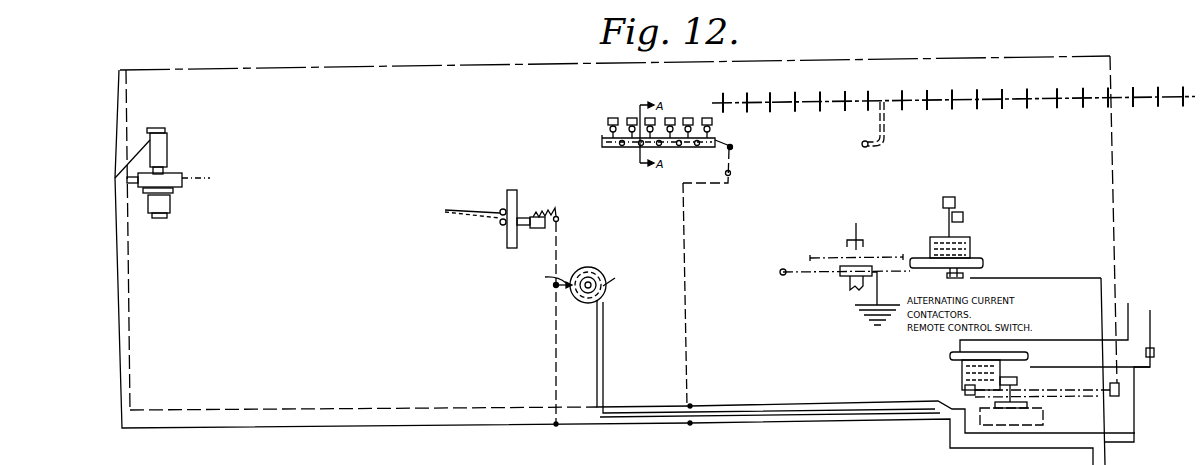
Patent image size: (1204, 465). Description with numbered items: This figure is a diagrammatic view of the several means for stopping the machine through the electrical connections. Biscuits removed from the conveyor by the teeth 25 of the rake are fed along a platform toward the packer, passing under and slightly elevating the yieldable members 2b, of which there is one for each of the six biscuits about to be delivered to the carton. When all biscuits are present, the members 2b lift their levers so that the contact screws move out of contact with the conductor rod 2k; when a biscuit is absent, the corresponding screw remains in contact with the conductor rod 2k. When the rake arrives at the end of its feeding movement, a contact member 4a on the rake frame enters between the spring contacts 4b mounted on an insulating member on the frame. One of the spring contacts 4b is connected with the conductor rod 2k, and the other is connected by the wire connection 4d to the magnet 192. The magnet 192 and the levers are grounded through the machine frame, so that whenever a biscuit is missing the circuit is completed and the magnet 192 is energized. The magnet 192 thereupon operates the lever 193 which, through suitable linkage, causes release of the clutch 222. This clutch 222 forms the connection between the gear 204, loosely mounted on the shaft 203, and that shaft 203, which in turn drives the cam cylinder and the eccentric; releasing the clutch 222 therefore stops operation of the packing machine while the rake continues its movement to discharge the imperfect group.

The conductor rod 2k is at (612, 134).
The yieldable members 2b is at (628, 118).
The spring contacts 4b is at (734, 147).
The wire connection 4d is at (731, 164).
The teeth of the rake 25 is at (822, 102).
The contact member 4a is at (863, 147).
The shaft 203 is at (849, 232).
The gear 204 is at (818, 258).
The clutch 222 is at (860, 267).
The magnet 192 is at (965, 250).
The lever 193 is at (976, 277).